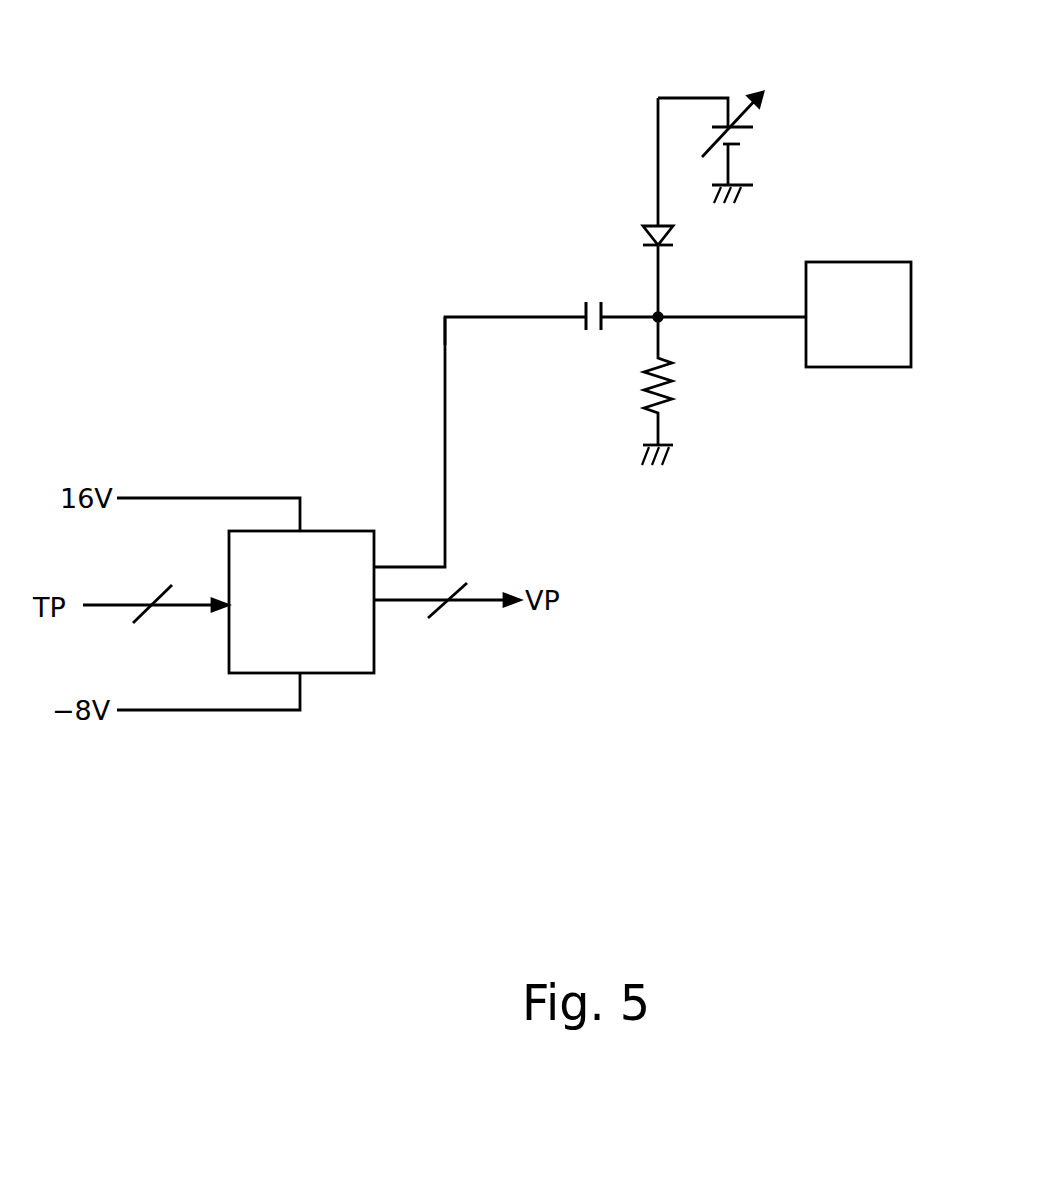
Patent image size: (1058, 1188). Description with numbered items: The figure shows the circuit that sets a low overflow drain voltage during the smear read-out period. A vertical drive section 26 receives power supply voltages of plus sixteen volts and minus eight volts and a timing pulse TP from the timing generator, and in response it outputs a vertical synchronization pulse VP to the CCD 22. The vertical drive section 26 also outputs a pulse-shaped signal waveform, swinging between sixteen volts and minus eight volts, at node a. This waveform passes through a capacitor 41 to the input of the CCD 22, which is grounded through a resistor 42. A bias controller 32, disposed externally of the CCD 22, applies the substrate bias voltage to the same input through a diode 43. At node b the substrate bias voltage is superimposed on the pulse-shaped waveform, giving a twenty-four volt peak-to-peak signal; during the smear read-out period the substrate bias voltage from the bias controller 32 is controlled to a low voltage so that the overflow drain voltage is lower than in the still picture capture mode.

The CCD 22 is at (857, 368).
The vertical drive section 26 is at (347, 673).
The bias controller 32 is at (794, 114).
The capacitor 41 is at (595, 337).
The resistor 42 is at (667, 387).
The diode 43 is at (647, 231).
The node a is at (447, 320).
The node b is at (663, 313).